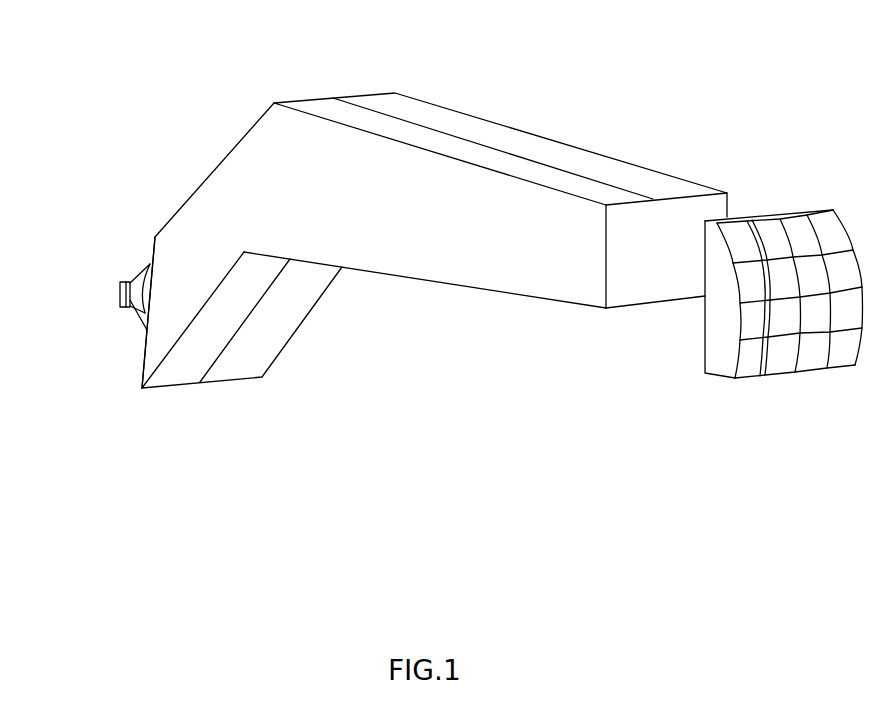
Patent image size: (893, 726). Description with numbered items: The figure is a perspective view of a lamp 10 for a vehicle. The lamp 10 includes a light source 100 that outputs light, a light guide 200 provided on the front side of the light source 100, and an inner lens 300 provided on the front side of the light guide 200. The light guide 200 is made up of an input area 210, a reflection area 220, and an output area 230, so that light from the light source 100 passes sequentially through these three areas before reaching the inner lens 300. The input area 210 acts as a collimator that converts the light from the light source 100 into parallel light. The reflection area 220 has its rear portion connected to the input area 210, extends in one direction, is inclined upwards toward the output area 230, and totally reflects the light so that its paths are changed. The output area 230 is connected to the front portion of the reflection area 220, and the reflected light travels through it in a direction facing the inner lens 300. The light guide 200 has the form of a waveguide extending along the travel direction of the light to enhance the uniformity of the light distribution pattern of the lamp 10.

The lamp for a vehicle 10 is at (750, 50).
The light source 100 is at (120, 290).
The light guide 200 is at (415, 290).
The input area 210 is at (129, 335).
The reflection area 220 is at (188, 300).
The output area 230 is at (423, 262).
The inner lens 300 is at (752, 358).